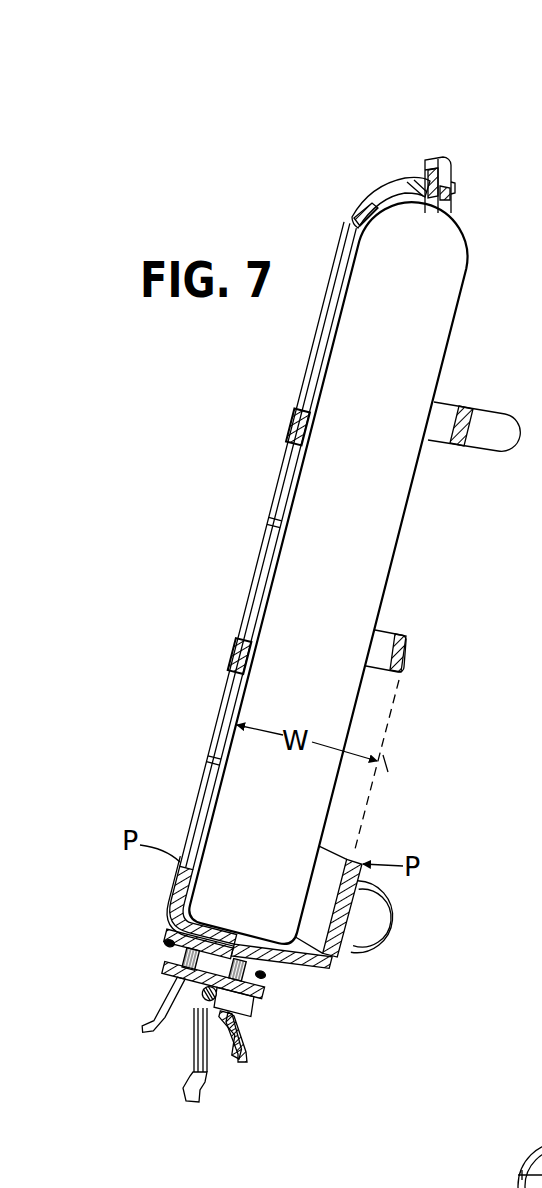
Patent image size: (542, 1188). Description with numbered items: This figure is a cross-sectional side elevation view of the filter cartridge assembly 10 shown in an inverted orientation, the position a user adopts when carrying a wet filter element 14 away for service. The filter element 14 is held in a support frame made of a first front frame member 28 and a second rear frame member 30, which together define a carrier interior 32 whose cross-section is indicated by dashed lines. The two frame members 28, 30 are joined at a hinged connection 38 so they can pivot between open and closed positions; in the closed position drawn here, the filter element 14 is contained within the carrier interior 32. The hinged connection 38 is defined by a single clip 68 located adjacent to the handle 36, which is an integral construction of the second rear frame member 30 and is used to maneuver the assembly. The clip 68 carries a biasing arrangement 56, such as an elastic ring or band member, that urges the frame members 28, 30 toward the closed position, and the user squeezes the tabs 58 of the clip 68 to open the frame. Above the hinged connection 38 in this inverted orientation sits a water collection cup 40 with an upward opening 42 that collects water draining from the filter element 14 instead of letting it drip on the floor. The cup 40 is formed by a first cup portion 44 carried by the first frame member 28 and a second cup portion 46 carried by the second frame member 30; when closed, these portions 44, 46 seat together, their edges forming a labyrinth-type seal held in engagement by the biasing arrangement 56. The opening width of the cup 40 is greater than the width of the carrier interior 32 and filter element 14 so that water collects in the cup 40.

The filter cartridge assembly 10 is at (333, 92).
The filter element 14 is at (414, 540).
The first front frame member 28 is at (394, 178).
The second rear frame member 30 is at (456, 183).
The carrier interior 32 is at (230, 654).
The handle 36 is at (185, 1090).
The hinged connection 38 is at (184, 990).
The water collection cup 40 is at (180, 885).
The upward opening 42 is at (357, 856).
The first cup portion 44 is at (178, 905).
The second cup portion 46 is at (350, 918).
The biasing arrangement 56 is at (163, 945).
The tabs 58 is at (166, 1032).
The clip 68 is at (267, 1031).